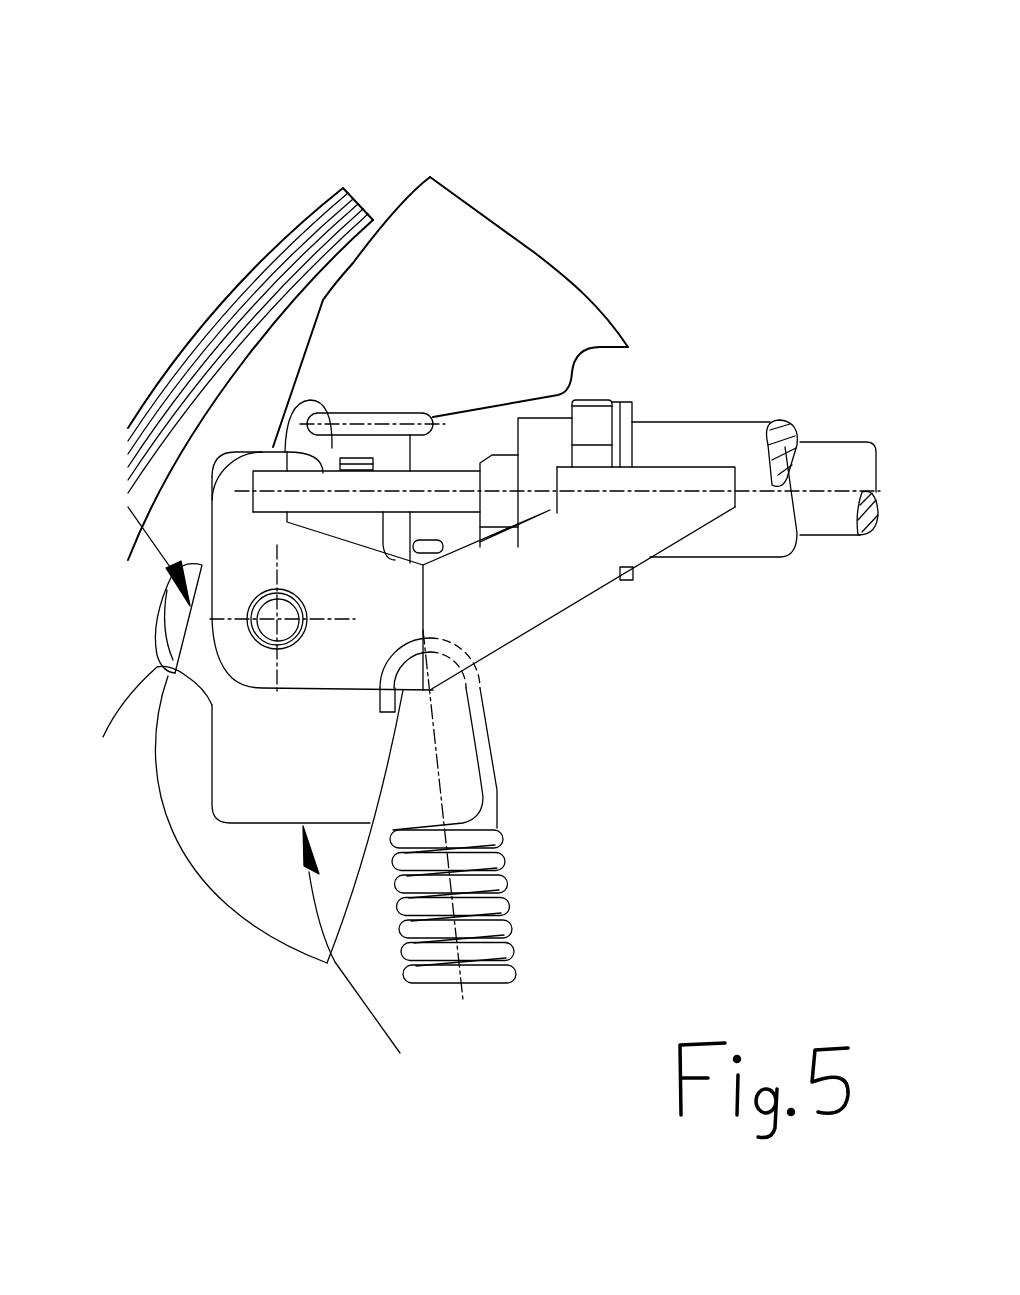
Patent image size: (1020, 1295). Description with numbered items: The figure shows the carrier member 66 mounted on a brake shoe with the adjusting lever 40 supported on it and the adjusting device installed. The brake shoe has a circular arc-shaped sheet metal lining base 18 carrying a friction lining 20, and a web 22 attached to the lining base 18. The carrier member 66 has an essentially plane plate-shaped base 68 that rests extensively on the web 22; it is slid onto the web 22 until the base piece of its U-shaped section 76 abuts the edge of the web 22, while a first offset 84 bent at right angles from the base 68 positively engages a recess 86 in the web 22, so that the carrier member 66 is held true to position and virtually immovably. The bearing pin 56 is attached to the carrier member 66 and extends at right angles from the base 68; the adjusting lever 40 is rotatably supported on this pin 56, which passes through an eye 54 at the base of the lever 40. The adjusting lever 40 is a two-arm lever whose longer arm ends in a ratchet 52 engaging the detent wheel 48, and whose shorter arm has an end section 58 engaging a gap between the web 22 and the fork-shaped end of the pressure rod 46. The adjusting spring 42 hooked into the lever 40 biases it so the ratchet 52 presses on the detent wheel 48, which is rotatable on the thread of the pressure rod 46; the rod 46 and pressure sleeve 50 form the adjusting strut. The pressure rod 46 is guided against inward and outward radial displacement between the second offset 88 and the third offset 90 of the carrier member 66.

The sheet metal lining base 18 is at (417, 200).
The friction lining 20 is at (323, 187).
The web 22 is at (457, 228).
The adjusting lever 40 is at (507, 610).
The adjusting spring 42 is at (473, 927).
The pressure rod 46 is at (818, 468).
The detent wheel 48 is at (592, 435).
The pressure sleeve 50 is at (745, 538).
The ratchet 52 is at (578, 482).
The eye 54 is at (128, 428).
The bearing pin 56 is at (290, 655).
The end section 58 is at (263, 465).
The carrier member 66 is at (374, 953).
The plate-shaped base 68 is at (244, 757).
The U-shaped section 76 is at (373, 772).
The first offset 84 is at (128, 487).
The recess 86 is at (140, 682).
The second offset 88 is at (440, 533).
The third offset 90 is at (357, 457).